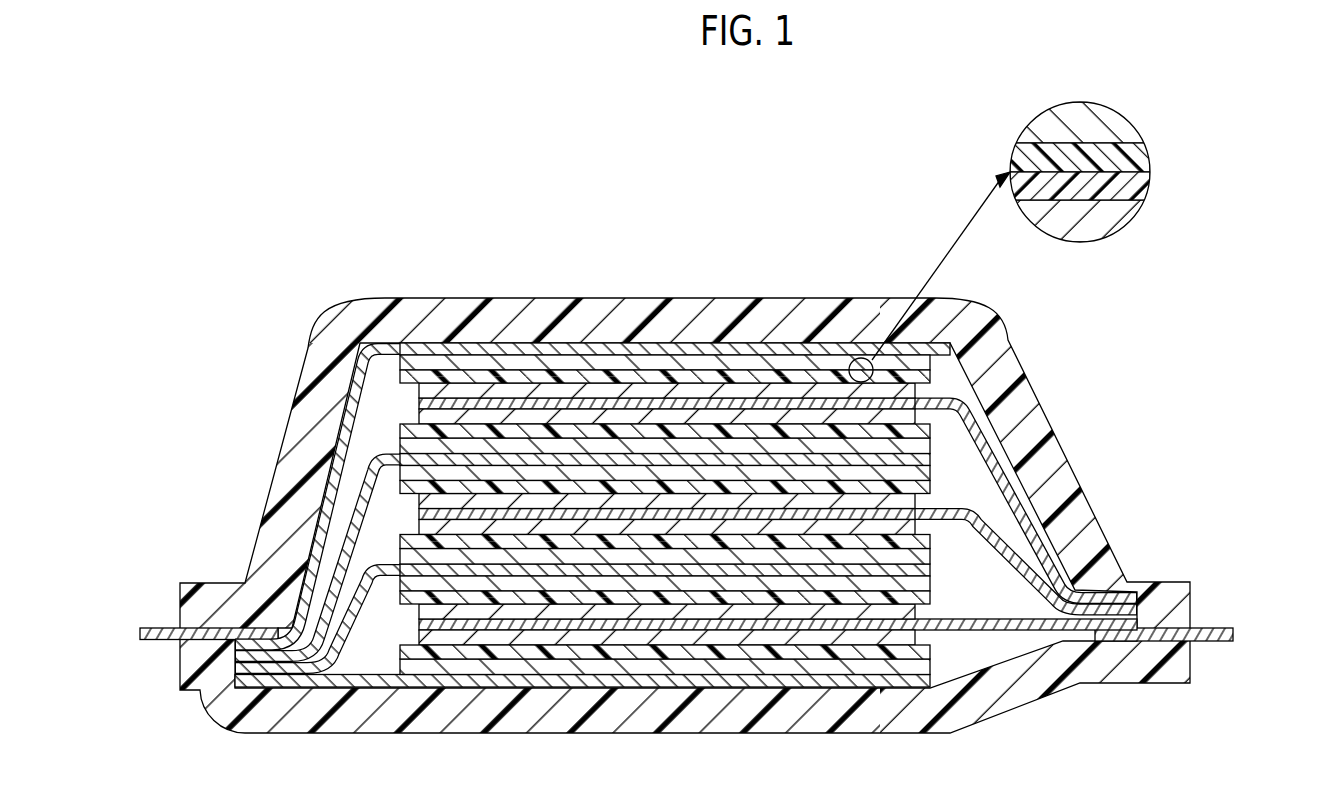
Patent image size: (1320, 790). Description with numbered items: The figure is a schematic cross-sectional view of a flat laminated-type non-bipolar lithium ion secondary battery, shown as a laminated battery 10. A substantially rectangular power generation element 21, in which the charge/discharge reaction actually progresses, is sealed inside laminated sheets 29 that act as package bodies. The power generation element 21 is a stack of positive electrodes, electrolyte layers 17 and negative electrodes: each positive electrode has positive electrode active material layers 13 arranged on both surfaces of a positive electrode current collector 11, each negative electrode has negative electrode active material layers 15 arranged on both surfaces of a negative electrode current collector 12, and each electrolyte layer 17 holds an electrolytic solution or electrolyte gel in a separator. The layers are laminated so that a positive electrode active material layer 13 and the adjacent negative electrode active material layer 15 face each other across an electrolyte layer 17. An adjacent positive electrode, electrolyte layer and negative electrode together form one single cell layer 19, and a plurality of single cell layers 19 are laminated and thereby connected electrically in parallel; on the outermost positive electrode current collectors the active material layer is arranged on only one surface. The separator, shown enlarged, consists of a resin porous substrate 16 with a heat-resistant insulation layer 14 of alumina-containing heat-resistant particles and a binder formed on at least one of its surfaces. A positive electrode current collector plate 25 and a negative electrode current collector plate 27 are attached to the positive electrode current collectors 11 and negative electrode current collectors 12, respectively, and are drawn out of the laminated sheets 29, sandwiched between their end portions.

The laminated battery 10 is at (305, 238).
The positive electrode current collector 11 is at (845, 342).
The negative electrode current collector 12 is at (588, 402).
The positive electrode active material layer 13 is at (770, 366).
The heat-resistant insulation layer 14 is at (1148, 151).
The negative electrode active material layer 15 is at (650, 388).
The resin porous substrate 16 is at (814, 415).
The electrolyte layer 17 is at (844, 388).
The single cell layer 19 is at (580, 222).
The power generation element 21 is at (944, 570).
The positive electrode current collector plate 25 is at (150, 628).
The negative electrode current collector plate 27 is at (1212, 628).
The laminated sheet 29 is at (1168, 582).